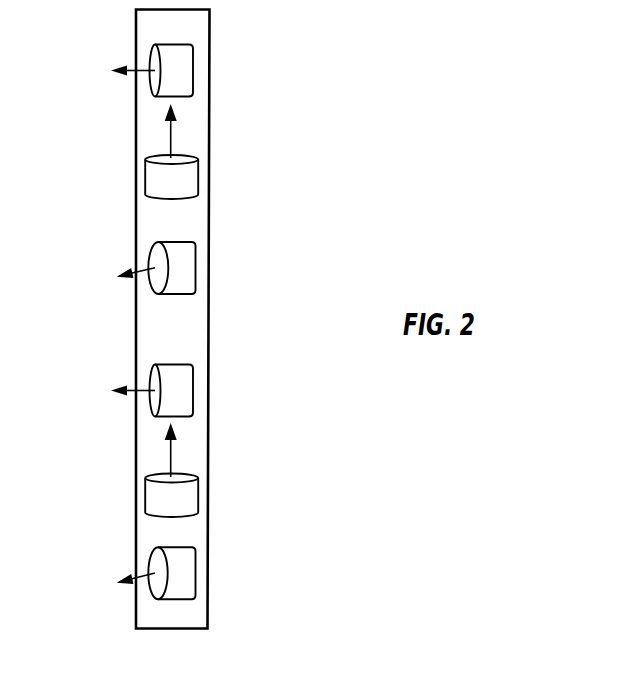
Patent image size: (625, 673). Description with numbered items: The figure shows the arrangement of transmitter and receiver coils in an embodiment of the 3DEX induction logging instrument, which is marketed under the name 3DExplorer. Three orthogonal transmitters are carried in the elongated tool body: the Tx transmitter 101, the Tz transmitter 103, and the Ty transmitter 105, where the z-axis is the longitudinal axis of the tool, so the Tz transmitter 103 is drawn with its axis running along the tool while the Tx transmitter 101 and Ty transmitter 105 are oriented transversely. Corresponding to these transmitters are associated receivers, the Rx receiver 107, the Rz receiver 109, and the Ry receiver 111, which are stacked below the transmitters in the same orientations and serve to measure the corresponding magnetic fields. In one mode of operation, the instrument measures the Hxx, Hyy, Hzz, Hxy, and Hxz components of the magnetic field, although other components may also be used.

The Tx transmitter 101 is at (287, 51).
The Tz transmitter 103 is at (287, 154).
The Ty transmitter 105 is at (287, 240).
The Rx receiver 107 is at (287, 372).
The Rz receiver 109 is at (287, 471).
The Ry receiver 111 is at (287, 556).